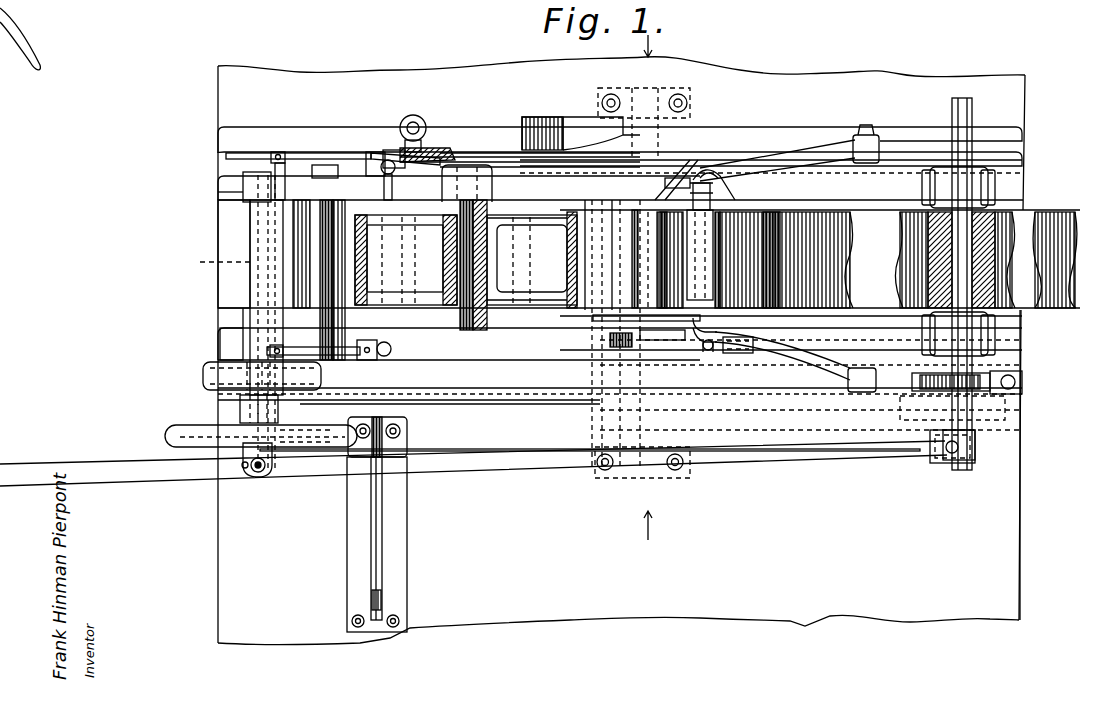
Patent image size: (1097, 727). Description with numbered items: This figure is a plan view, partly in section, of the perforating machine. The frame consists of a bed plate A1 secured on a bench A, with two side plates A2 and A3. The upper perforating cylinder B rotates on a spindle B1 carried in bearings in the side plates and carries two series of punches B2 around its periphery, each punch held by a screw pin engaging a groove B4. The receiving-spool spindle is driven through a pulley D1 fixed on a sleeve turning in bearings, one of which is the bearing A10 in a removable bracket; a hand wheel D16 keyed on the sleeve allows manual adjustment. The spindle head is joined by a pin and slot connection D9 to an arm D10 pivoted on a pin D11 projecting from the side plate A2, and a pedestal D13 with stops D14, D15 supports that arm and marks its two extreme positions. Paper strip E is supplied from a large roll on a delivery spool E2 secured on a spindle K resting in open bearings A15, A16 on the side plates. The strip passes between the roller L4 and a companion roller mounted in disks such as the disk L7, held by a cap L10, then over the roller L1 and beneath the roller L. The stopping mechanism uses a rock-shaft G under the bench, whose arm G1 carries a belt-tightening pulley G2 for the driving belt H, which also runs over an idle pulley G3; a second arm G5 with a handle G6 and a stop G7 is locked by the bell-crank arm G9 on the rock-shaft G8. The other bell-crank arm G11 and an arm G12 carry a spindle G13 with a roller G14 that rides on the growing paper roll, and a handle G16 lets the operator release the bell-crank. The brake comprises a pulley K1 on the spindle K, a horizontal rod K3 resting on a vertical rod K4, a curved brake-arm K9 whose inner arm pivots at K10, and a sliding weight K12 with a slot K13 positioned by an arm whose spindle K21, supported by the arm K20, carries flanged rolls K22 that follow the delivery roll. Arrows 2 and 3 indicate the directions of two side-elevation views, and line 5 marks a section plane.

The bench A is at (434, 72).
The bed plate A1 is at (228, 277).
The side plate A2 is at (226, 322).
The side plate A3 is at (238, 190).
The bearing A10 is at (232, 403).
The open bearing A15 is at (990, 330).
The open bearing A16 is at (975, 187).
The upper cylinder B is at (578, 240).
The spindle B1 is at (515, 238).
The punches B2 is at (578, 283).
The groove B4 is at (578, 262).
The pulley D1 is at (218, 362).
The pin and slot connection D9 is at (255, 473).
The arm D10 is at (495, 452).
The pin D11 is at (933, 465).
The pedestal D13 is at (405, 532).
The stop D14 is at (405, 452).
The stop D15 is at (382, 585).
The hand wheel D16 is at (172, 428).
The paper strip E is at (1030, 318).
The delivery spool E2 is at (1020, 208).
The rock-shaft G is at (645, 478).
The arm G1 is at (807, 448).
The belt tightening pulley G2 is at (1022, 425).
The idle pulley G3 is at (345, 396).
The arm G5 is at (495, 150).
The handle G6 is at (452, 148).
The stop G7 is at (428, 160).
The rock-shaft G8 is at (440, 108).
The bell-crank arm G9 is at (495, 148).
The bell-crank arm G11 is at (386, 150).
The arm G12 is at (375, 358).
The spindle G13 is at (365, 156).
The roller G14 is at (248, 232).
The handle G16 is at (262, 158).
The driving belt H is at (240, 400).
The spindle K is at (975, 122).
The pulley K1 is at (1006, 398).
The horizontal rod K3 is at (680, 322).
The vertical rod K4 is at (650, 342).
The brake-arm K9 is at (1022, 380).
The pivot K10 is at (840, 368).
The weight K12 is at (740, 355).
The slot K13 is at (705, 352).
The arm K20 is at (812, 160).
The spindle K21 is at (780, 148).
The flanged roll K22 is at (612, 348).
The roller L is at (590, 300).
The roller L1 is at (680, 160).
The roller L4 is at (690, 176).
The disk L7 is at (715, 188).
The cap L10 is at (722, 160).
The arrow 2 is at (646, 537).
The arrow 3 is at (656, 43).
The section line 5 is at (215, 266).